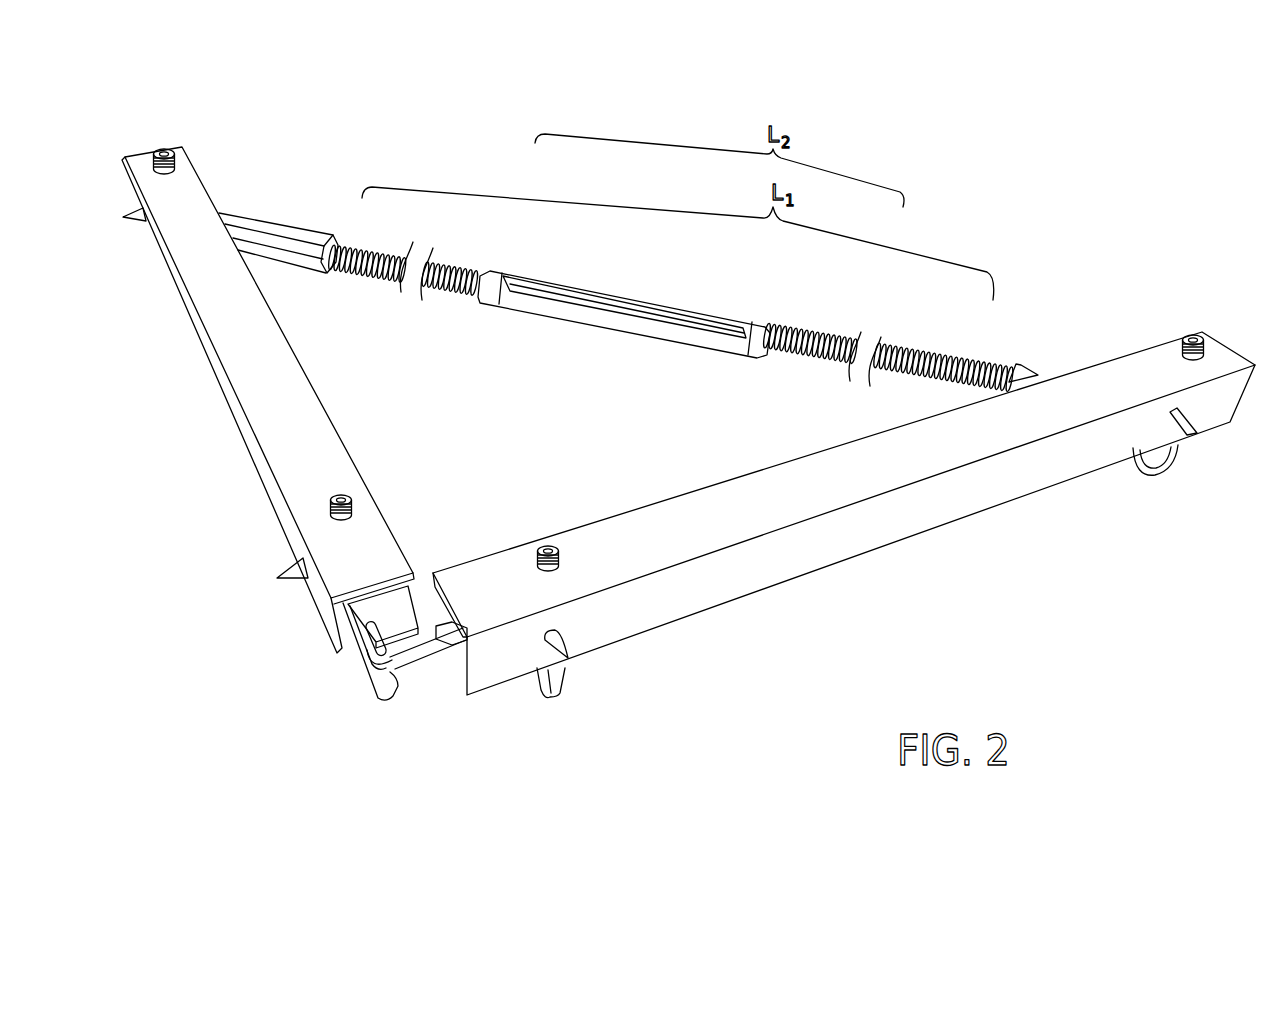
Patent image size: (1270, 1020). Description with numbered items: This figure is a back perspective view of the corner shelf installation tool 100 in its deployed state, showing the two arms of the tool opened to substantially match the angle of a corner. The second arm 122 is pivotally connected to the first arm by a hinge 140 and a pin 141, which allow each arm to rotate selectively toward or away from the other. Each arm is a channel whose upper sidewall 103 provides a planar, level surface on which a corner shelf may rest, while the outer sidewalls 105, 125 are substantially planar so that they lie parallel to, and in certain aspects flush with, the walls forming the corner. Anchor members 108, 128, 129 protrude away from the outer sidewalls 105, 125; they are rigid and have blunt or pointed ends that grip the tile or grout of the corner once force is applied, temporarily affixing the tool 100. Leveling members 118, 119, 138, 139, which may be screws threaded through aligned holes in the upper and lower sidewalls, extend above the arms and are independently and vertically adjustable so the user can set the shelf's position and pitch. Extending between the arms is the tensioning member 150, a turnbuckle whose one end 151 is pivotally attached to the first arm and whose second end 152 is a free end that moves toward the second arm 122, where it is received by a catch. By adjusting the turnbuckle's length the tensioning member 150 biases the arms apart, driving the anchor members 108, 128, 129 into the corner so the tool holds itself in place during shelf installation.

The corner shelf installation tool 100 is at (960, 157).
The upper sidewall 103 is at (262, 375).
The outer sidewall 105 is at (192, 318).
The anchor member 108 is at (140, 217).
The leveling member 118 is at (162, 150).
The leveling member 119 is at (340, 488).
The second arm 122 is at (943, 450).
The outer sidewall 125 is at (845, 535).
The anchor member 128 is at (1187, 425).
The anchor member 129 is at (295, 572).
The leveling member 138 is at (1193, 334).
The leveling member 139 is at (553, 543).
The hinge 140 is at (387, 682).
The pin 141 is at (370, 630).
The tensioning member 150 is at (588, 285).
The end of tensioning member 151 is at (227, 223).
The second end of tensioning member 152 is at (1027, 372).